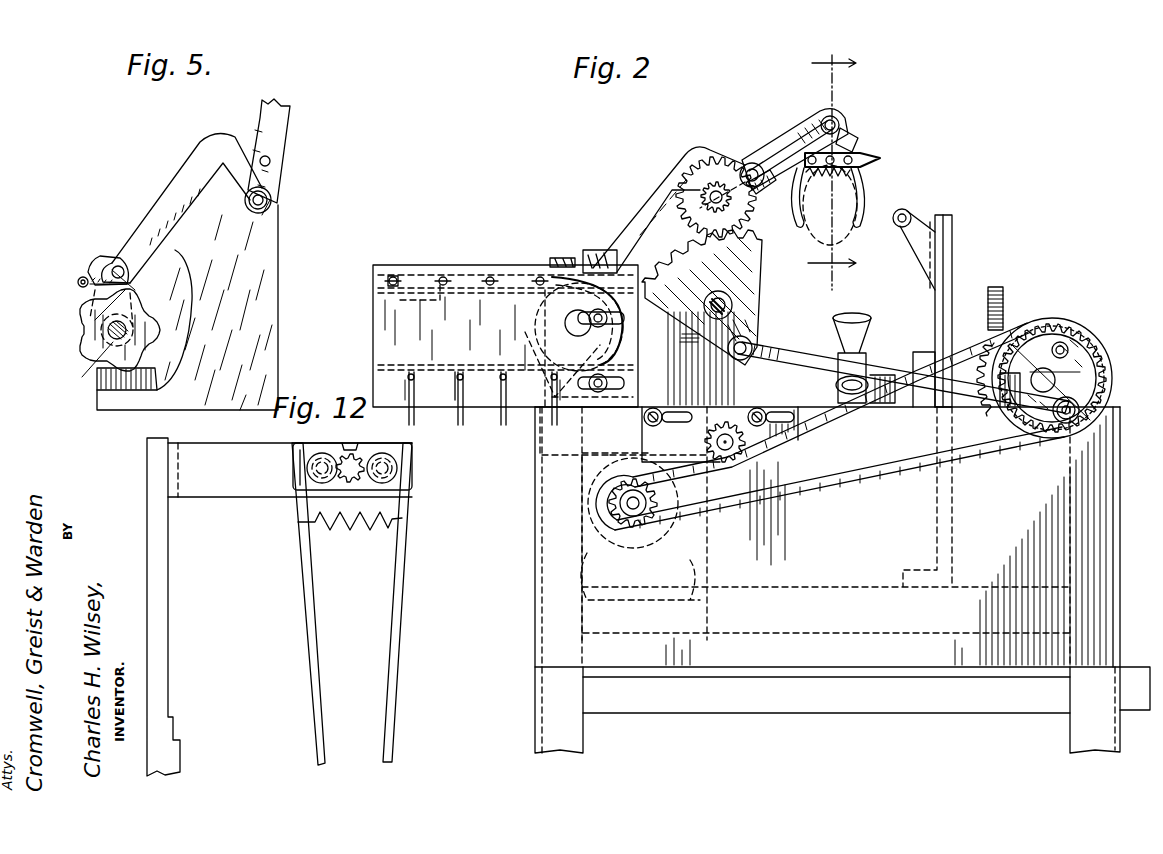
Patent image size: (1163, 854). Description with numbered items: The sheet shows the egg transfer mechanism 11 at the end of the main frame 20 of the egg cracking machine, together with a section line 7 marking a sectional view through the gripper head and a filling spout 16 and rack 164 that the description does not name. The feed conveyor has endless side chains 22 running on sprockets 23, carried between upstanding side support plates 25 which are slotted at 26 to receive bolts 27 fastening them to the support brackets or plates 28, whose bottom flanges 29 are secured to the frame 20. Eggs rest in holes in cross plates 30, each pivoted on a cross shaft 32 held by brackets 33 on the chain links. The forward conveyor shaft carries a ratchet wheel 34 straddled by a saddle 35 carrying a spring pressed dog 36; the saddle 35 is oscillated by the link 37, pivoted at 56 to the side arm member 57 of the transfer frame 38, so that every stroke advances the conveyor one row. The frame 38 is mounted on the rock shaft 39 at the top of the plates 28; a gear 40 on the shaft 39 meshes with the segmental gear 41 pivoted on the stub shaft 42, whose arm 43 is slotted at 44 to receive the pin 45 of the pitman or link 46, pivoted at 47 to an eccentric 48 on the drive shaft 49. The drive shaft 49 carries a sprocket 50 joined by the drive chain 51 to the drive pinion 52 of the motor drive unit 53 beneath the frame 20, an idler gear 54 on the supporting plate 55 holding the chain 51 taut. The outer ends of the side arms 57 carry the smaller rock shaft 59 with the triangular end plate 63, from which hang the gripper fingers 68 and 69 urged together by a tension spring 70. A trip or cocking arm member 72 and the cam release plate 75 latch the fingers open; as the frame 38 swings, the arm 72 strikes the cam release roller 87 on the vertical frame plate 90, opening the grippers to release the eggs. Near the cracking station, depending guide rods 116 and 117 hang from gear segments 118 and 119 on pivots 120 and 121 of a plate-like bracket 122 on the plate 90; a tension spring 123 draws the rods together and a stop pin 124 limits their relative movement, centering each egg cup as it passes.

In FIG. 2, the section line 7- 7 is at (832, 164).
In FIG. 2, the transfer mechanism 11 is at (737, 120).
In FIG. 2, the funnel / filling spout 16 is at (868, 326).
In FIG. 2, the main frame 20 is at (535, 497).
In FIG. 2, the side chains 22 is at (505, 332).
In FIG. 5, the sprockets 23 is at (98, 330).
In FIG. 2, the sprockets 23 is at (540, 326).
In FIG. 2, the side support plates 25 is at (460, 400).
In FIG. 2, the slots 26 is at (588, 318).
In FIG. 2, the bolts 27 is at (606, 378).
In FIG. 5, the support brackets or plates 28 is at (272, 352).
In FIG. 2, the support brackets or plates 28 is at (722, 390).
In FIG. 2, the bottom flanges 29 is at (640, 410).
In FIG. 2, the cross plates 30 is at (470, 272).
In FIG. 2, the cross shaft 32 is at (393, 276).
In FIG. 2, the brackets 33 is at (446, 292).
In FIG. 5, the ratchet wheel 34 is at (82, 335).
In FIG. 2, the ratchet wheel 34 is at (540, 318).
In FIG. 5, the saddle 35 is at (100, 262).
In FIG. 5, the spring pressed dog 36 is at (78, 286).
In FIG. 5, the link 37 is at (180, 172).
In FIG. 2, the link 37 is at (660, 200).
In FIG. 5, the frame 38 is at (282, 141).
In FIG. 2, the frame 38 is at (801, 125).
In FIG. 5, the cross shaft 39 is at (272, 198).
In FIG. 2, the cross shaft 39 is at (733, 205).
In FIG. 2, the gear 40 is at (748, 230).
In FIG. 2, the segmental gear 41 is at (752, 265).
In FIG. 2, the stub shaft 42 is at (733, 302).
In FIG. 2, the arm 43 is at (745, 324).
In FIG. 2, the slot 44 is at (722, 330).
In FIG. 2, the pin 45 is at (752, 344).
In FIG. 2, the operating pitman or link 46 is at (776, 358).
In FIG. 2, the pivot 47 is at (1080, 409).
In FIG. 2, the eccentric 48 is at (1058, 380).
In FIG. 2, the drive shaft 49 is at (1066, 348).
In FIG. 2, the gear or sprocket 50 is at (1040, 322).
In FIG. 2, the drive chain 51 is at (871, 490).
In FIG. 2, the drive pinion or sprocket 52 is at (652, 546).
In FIG. 2, the motor drive unit 53 is at (582, 535).
In FIG. 2, the idler gear 54 is at (735, 464).
In FIG. 2, the supporting plate 55 is at (688, 441).
In FIG. 5, the pivot connection 56 is at (272, 162).
In FIG. 2, the pivot connection 56 is at (744, 170).
In FIG. 2, the side arm member 57 is at (775, 145).
In FIG. 2, the rock shaft 59 is at (838, 121).
In FIG. 2, the end plate 63 is at (848, 145).
In FIG. 2, the gripper finger 68 is at (764, 186).
In FIG. 2, the gripper finger 69 is at (864, 201).
In FIG. 2, the tension spring 70 is at (830, 205).
In FIG. 2, the trip or cocking arm member 72 is at (866, 168).
In FIG. 2, the cam release plate 75 is at (866, 156).
In FIG. 2, the cam release roller 87 is at (914, 237).
In FIG. 12, the frame plate 90 is at (160, 470).
In FIG. 2, the frame plate 90 is at (955, 222).
In FIG. 12, the guide rod 116 is at (310, 616).
In FIG. 12, the guide rod 117 is at (397, 612).
In FIG. 12, the gear segment 118 is at (315, 480).
In FIG. 12, the gear segment 119 is at (405, 490).
In FIG. 12, the pivot 120 is at (302, 468).
In FIG. 12, the pivot 121 is at (400, 468).
In FIG. 12, the plate-like bracket 122 is at (200, 490).
In FIG. 12, the tension spring 123 is at (358, 530).
In FIG. 12, the stop pin 124 is at (352, 448).
In FIG. 2, the rack 164 is at (997, 286).